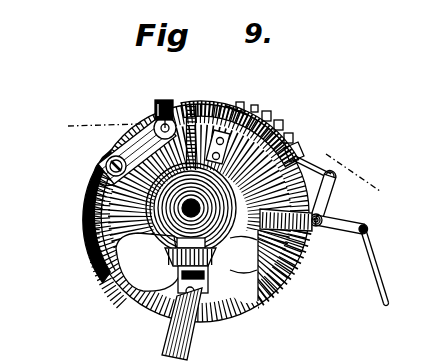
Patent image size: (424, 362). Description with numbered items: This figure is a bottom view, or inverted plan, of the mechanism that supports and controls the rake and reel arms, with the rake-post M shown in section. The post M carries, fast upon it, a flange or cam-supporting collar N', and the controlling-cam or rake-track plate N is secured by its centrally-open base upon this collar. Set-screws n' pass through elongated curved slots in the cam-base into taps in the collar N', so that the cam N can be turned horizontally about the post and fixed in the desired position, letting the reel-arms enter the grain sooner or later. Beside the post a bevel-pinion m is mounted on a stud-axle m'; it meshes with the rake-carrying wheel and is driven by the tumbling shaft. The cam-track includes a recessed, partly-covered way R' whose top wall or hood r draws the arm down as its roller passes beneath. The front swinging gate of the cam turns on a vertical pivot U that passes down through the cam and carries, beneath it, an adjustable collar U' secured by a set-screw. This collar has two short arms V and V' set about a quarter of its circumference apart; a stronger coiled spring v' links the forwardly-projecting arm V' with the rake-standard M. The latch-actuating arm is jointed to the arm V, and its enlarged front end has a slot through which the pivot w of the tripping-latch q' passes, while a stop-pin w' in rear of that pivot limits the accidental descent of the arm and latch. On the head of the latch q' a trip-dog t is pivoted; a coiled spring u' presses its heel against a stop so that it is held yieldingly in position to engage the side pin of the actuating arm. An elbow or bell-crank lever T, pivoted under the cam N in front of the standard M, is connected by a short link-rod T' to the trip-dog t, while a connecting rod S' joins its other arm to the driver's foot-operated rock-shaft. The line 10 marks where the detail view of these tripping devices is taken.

The rake-post M is at (200, 213).
The recessed part of the cam-track R' is at (297, 232).
The vertical pivot U is at (148, 106).
The adjustable collar U' is at (133, 151).
The collar arm V is at (166, 105).
The collar arm V' is at (247, 92).
The coiled spring v' is at (179, 138).
The bell-crank lever T is at (339, 201).
The short link-rod T' is at (321, 163).
The trip-dog t is at (296, 146).
The hood r is at (237, 107).
The tripping-latch pivot w is at (282, 117).
The stop-pin w' is at (265, 103).
The coiled spring u' is at (303, 128).
The tripping-latch q' is at (281, 98).
The set-screws n' is at (228, 154).
The cam N is at (325, 250).
The cam-supporting collar N' is at (176, 265).
The bevel-pinion m is at (243, 244).
The stud-axle m' is at (243, 265).
The connecting rod S' is at (378, 265).
The section line 10 is at (220, 159).